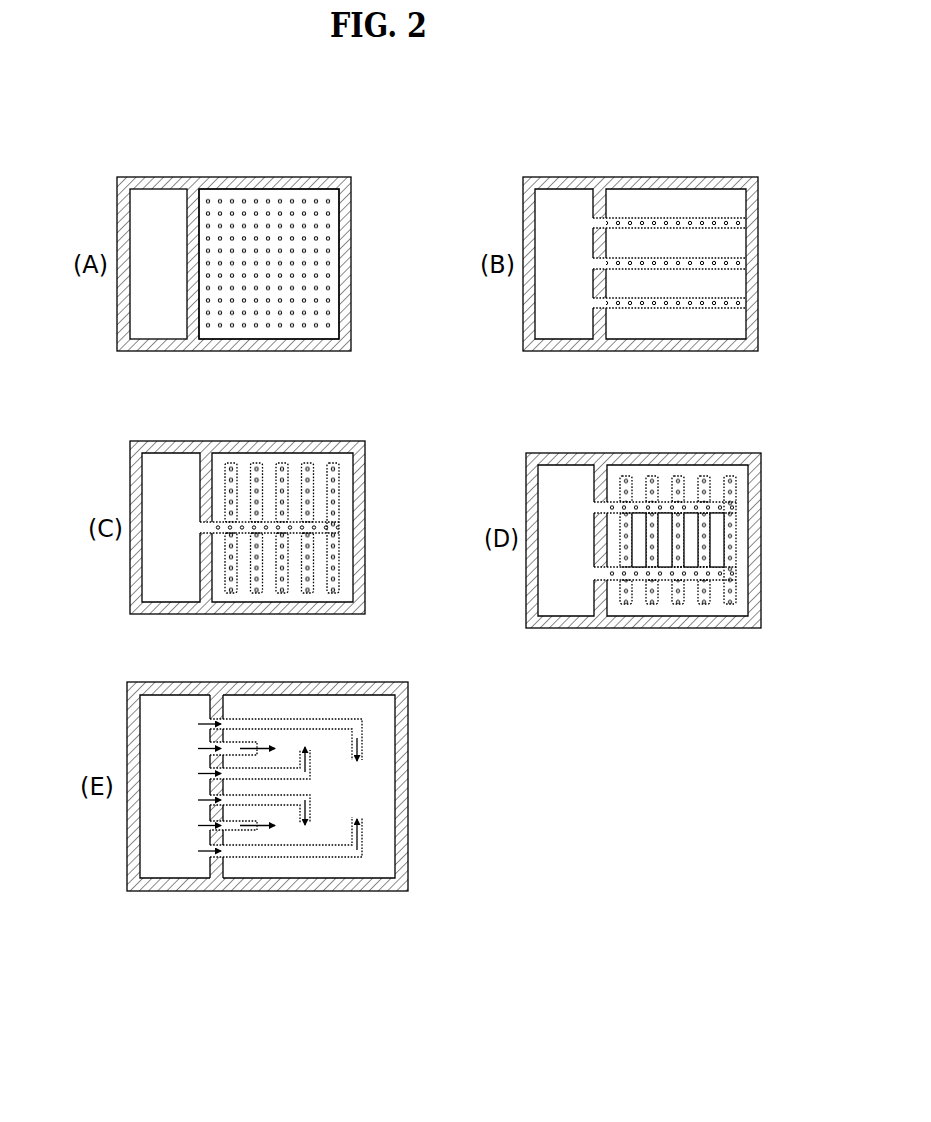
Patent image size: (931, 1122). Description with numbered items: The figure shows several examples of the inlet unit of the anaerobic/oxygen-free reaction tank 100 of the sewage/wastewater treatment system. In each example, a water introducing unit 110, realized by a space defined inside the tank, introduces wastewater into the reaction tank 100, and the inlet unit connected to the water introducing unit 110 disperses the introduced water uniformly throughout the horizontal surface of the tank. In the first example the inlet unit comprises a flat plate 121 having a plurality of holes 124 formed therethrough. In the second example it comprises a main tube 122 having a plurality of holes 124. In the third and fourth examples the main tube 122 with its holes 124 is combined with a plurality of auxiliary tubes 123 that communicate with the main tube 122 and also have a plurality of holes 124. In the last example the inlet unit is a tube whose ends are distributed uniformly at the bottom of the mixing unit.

The anaerobic/oxygen-free reaction tank 100 is at (258, 382).
The water introducing unit 110 is at (157, 238).
The flat plate 121 is at (225, 197).
The main tube 122 is at (703, 305).
The auxiliary tube 123 is at (333, 580).
The hole 124 is at (313, 207).